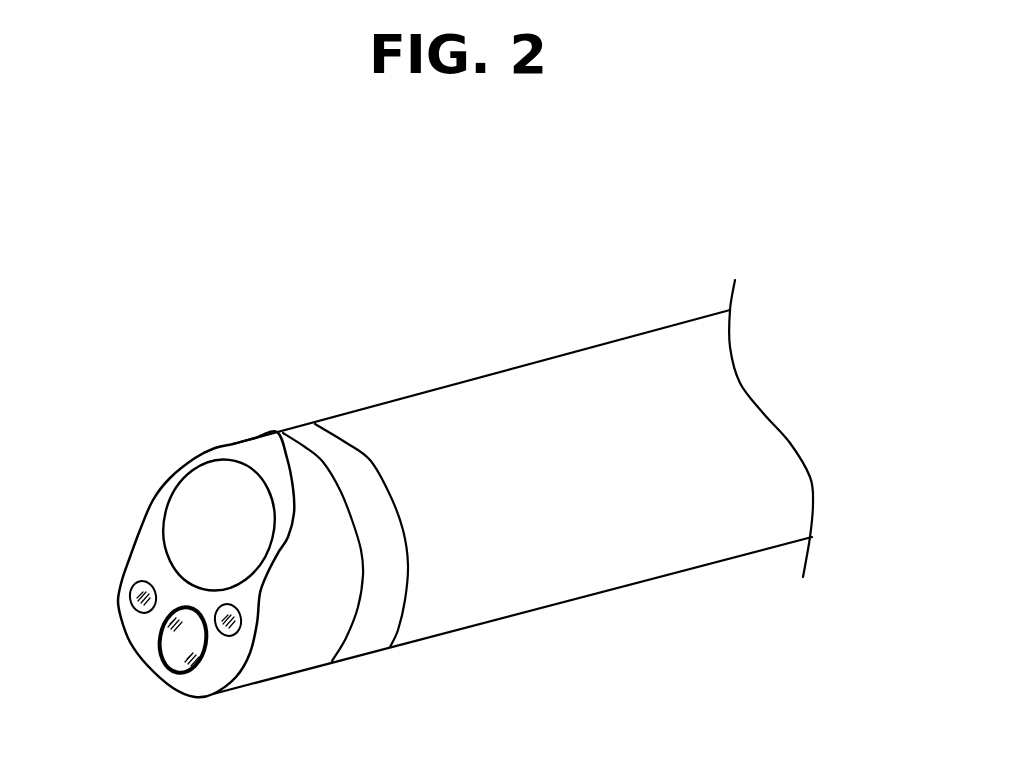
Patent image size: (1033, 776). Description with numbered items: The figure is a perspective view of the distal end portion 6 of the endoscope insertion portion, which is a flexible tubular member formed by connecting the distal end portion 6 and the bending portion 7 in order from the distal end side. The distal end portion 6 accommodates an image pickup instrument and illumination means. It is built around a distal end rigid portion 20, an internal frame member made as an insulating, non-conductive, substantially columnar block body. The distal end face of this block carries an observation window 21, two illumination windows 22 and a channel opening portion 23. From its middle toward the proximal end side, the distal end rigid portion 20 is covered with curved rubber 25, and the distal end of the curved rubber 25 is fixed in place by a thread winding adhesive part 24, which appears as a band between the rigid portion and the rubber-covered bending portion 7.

The distal end portion 6 is at (237, 412).
The bending portion 7 is at (436, 499).
The distal end rigid portion 20 is at (322, 635).
The observation window 21 is at (173, 662).
The illumination windows 22 is at (130, 595).
The channel opening portion 23 is at (187, 479).
The thread winding adhesive part 24 is at (383, 613).
The curved rubber 25 is at (628, 585).